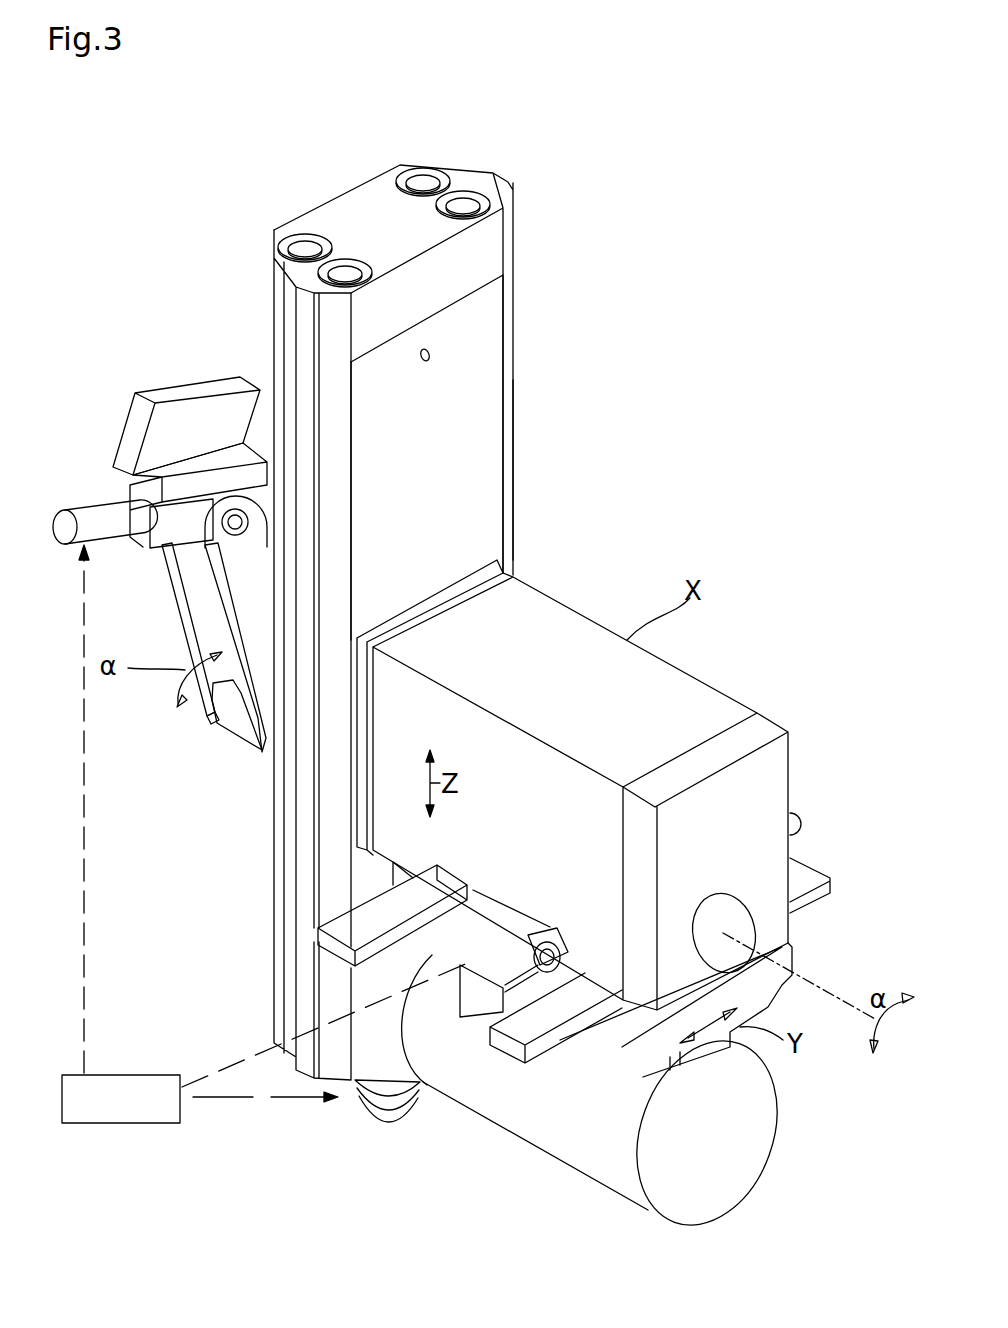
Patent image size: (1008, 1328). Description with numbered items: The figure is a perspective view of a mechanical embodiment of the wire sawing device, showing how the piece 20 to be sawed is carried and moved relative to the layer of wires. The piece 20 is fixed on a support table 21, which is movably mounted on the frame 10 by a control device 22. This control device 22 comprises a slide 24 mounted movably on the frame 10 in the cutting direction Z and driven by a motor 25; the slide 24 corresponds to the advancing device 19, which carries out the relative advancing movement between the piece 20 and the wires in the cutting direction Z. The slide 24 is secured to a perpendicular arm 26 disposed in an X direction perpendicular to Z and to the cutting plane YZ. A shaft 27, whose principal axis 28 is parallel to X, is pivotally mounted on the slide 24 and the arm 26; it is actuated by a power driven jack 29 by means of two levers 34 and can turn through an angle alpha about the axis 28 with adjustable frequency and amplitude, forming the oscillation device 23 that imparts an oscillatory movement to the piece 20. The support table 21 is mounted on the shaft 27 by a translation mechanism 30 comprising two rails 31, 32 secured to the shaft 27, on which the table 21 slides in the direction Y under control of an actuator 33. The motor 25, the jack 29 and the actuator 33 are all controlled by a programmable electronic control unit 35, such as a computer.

The frame 10 is at (360, 208).
The advancing device 19 is at (508, 240).
The slide 24 is at (487, 325).
The control device 22 is at (515, 378).
The perpendicular arm 26 is at (690, 707).
The shaft 27 is at (743, 923).
The principal axis 28 is at (821, 983).
The translation mechanism 30 is at (826, 866).
The power driven jack 29 is at (113, 518).
The levers 34 is at (193, 587).
The oscillation device 23 is at (233, 745).
The rail 31 is at (345, 930).
The rail 32 is at (543, 1023).
The actuator 33 is at (452, 994).
The support table 21 is at (652, 1052).
The piece to be sawed 20 is at (747, 1128).
The motor 25 is at (373, 1098).
The programmable electronic control unit 35 is at (266, 834).